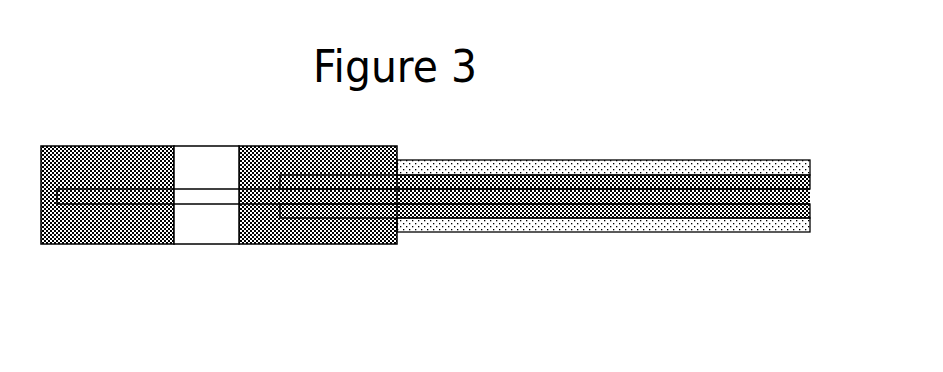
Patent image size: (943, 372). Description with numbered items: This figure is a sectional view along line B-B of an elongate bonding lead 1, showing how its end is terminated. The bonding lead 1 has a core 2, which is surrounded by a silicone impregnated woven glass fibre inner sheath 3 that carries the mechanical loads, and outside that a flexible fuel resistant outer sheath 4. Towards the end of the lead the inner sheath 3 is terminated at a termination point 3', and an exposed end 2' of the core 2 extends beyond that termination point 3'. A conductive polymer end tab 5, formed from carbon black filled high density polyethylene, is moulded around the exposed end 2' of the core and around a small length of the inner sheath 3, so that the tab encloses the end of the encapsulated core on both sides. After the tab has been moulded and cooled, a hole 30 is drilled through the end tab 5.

The bonding lead 1 is at (278, 275).
The core 2 is at (492, 163).
The exposed end of the core 2' is at (115, 156).
The inner sheath 3 is at (545, 241).
The termination point of the inner sheath 3' is at (524, 146).
The outer sheath 4 is at (648, 170).
The conductive polymer end tab 5 is at (137, 228).
The hole 30 is at (208, 236).